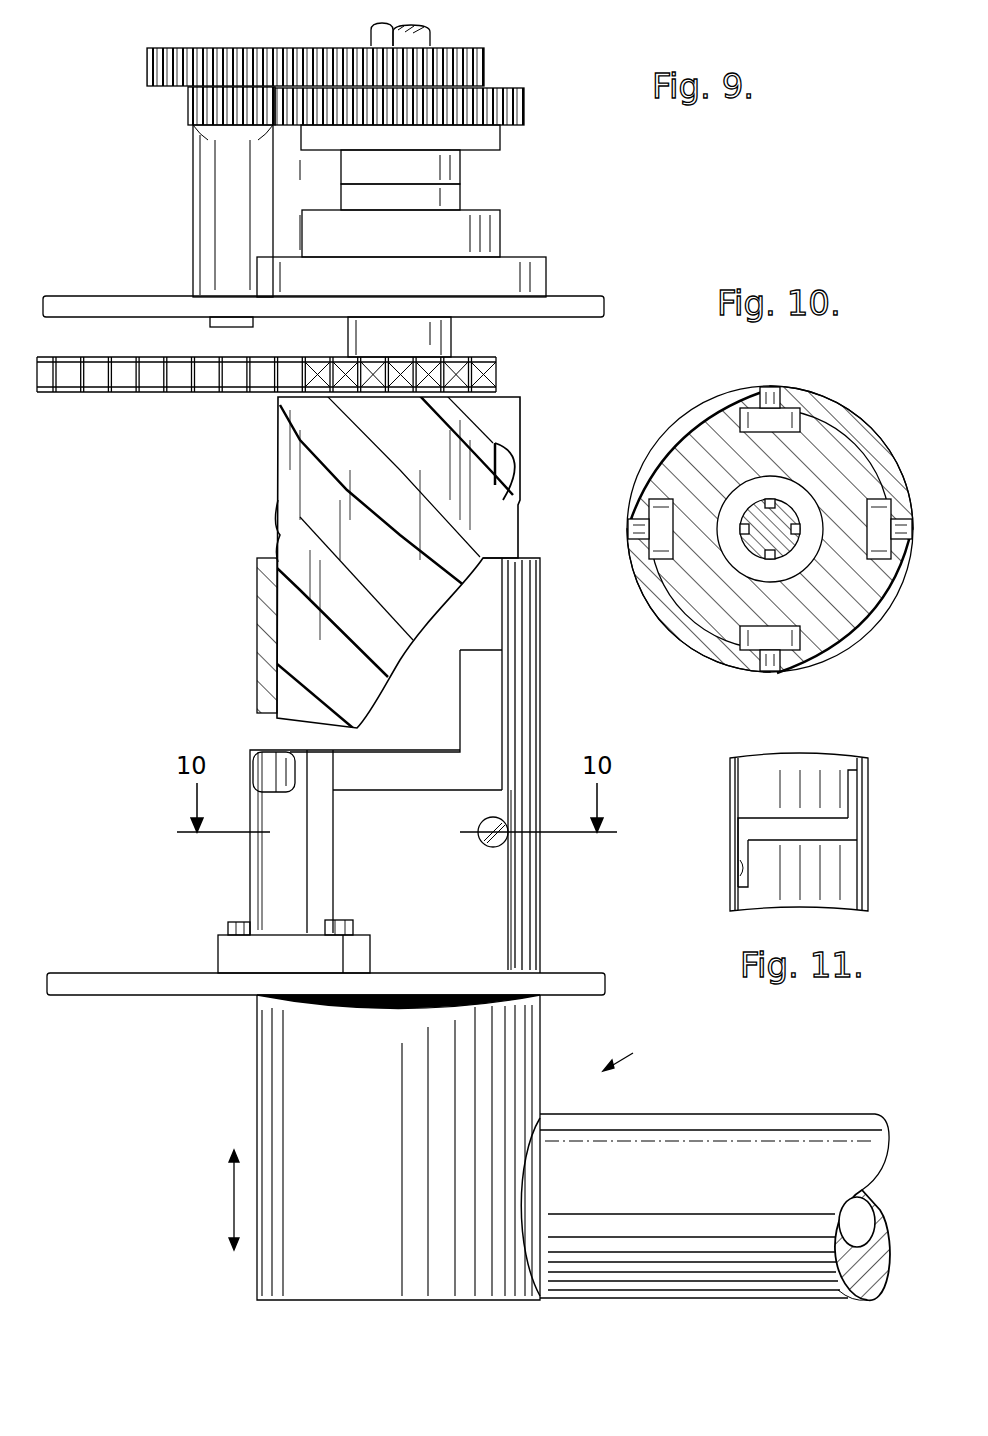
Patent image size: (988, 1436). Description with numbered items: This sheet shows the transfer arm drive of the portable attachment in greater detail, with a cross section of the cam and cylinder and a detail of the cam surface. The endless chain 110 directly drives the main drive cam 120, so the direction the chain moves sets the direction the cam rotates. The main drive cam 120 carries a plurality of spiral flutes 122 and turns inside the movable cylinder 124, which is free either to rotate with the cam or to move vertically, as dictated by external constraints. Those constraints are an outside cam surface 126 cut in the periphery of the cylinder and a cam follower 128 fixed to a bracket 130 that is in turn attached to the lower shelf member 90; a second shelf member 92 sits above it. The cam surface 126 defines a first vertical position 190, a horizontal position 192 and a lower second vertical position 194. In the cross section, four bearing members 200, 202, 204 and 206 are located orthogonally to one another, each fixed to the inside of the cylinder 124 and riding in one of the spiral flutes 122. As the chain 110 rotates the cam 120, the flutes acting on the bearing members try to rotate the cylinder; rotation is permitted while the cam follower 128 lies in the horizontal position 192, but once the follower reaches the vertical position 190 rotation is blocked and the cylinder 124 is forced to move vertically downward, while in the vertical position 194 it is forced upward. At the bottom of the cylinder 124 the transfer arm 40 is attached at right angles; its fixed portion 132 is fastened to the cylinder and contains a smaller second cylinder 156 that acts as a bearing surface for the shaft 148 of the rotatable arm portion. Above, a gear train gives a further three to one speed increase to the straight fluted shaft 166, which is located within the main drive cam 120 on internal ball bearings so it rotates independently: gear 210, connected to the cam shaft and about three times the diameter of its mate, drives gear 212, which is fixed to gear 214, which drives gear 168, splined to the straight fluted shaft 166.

In FIG. 9, the transfer arm 40 is at (631, 1050).
In FIG. 9, the shelf member 90 is at (575, 972).
In FIG. 9, the second shelf member 92 is at (125, 296).
In FIG. 9, the endless chain 110 is at (122, 388).
In FIG. 9, the main drive cam 120 is at (278, 471).
In FIG. 10, the main drive cam 120 is at (858, 458).
In FIG. 9, the spiral flutes 122 is at (513, 440).
In FIG. 10, the spiral flutes 122 is at (803, 407).
In FIG. 9, the movable cylinder 124 is at (542, 594).
In FIG. 10, the movable cylinder 124 is at (850, 413).
In FIG. 11, the movable cylinder 124 is at (832, 756).
In FIG. 9, the cam surface 126 is at (495, 745).
In FIG. 11, the cam surface 126 is at (845, 838).
In FIG. 9, the cam follower 128 is at (258, 770).
In FIG. 9, the bracket 130 is at (250, 888).
In FIG. 9, the fixed portion 132 is at (638, 1114).
In FIG. 9, the shaft 148 is at (868, 1203).
In FIG. 9, the second cylinder 156 is at (822, 1300).
In FIG. 9, the straight fluted shaft 166 is at (432, 40).
In FIG. 10, the straight fluted shaft 166 is at (798, 503).
In FIG. 9, the gear 168 is at (486, 68).
In FIG. 9, the first vertical position 190 is at (494, 652).
In FIG. 11, the first vertical position 190 is at (858, 782).
In FIG. 9, the horizontal position 192 is at (405, 752).
In FIG. 11, the horizontal position 192 is at (738, 825).
In FIG. 11, the lower second vertical position 194 is at (742, 870).
In FIG. 10, the bearing member 200 is at (750, 410).
In FIG. 10, the bearing member 202 is at (643, 525).
In FIG. 10, the bearing member 204 is at (760, 647).
In FIG. 10, the bearing member 206 is at (895, 547).
In FIG. 9, the gear 210 is at (524, 112).
In FIG. 9, the gear 212 is at (188, 106).
In FIG. 9, the gear 214 is at (148, 50).